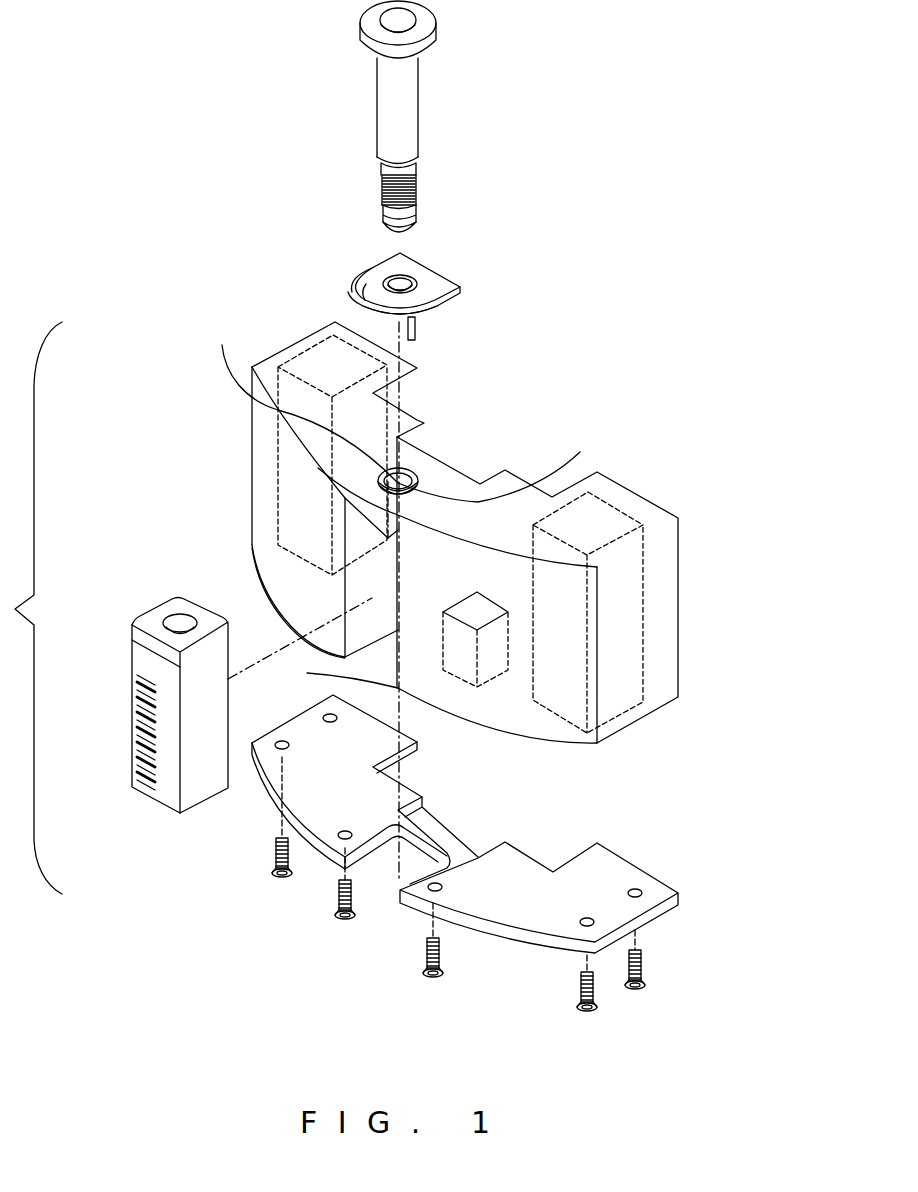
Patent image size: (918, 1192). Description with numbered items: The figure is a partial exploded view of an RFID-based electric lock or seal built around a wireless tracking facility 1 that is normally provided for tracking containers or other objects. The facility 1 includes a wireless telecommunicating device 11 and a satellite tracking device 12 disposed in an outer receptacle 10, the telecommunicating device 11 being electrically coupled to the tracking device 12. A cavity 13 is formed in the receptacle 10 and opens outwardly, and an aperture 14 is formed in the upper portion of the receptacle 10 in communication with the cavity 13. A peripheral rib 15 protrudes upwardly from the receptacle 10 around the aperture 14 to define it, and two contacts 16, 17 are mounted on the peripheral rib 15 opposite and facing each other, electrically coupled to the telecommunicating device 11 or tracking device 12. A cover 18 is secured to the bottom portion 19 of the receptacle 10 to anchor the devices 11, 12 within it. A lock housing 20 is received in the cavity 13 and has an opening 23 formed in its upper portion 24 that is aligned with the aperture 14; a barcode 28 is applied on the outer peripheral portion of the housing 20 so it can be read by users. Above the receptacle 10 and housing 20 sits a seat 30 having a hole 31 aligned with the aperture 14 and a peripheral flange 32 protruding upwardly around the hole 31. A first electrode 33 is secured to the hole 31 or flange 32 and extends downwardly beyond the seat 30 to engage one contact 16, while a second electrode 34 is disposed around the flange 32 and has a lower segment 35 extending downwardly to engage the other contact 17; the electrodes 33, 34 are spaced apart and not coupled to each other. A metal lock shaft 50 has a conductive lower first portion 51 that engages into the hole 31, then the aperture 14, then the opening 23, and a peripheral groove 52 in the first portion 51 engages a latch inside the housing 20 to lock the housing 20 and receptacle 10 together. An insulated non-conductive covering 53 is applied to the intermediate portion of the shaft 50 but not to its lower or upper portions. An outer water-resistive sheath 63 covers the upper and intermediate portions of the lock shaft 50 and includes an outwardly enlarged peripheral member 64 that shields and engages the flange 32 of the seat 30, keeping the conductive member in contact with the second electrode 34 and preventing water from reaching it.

The wireless tracking facility 1 is at (638, 476).
The receptacle 10 is at (657, 517).
The wireless telecommunicating device 11 is at (620, 700).
The satellite tracking device 12 is at (300, 482).
The cavity 13 is at (307, 673).
The aperture 14 is at (400, 481).
The peripheral rib 15 is at (414, 472).
The contact 16 is at (509, 463).
The contact 17 is at (300, 398).
The cover 18 is at (608, 875).
The bottom portion 19 is at (587, 1004).
The housing 20 is at (192, 797).
The opening 23 is at (160, 622).
The upper portion 24 is at (140, 642).
The barcode 28 is at (142, 733).
The seat 30 is at (443, 288).
The hole 31 is at (413, 280).
The peripheral flange 32 is at (390, 270).
The first electrode 33 is at (415, 332).
The second electrode 34 is at (378, 297).
The lower segment 35 is at (383, 314).
The lock shaft 50 is at (408, 212).
The first portion 51 is at (383, 210).
The groove 52 is at (410, 227).
The non-conductive covering 53 is at (380, 182).
The sheath 63 is at (413, 93).
The peripheral member 64 is at (418, 165).